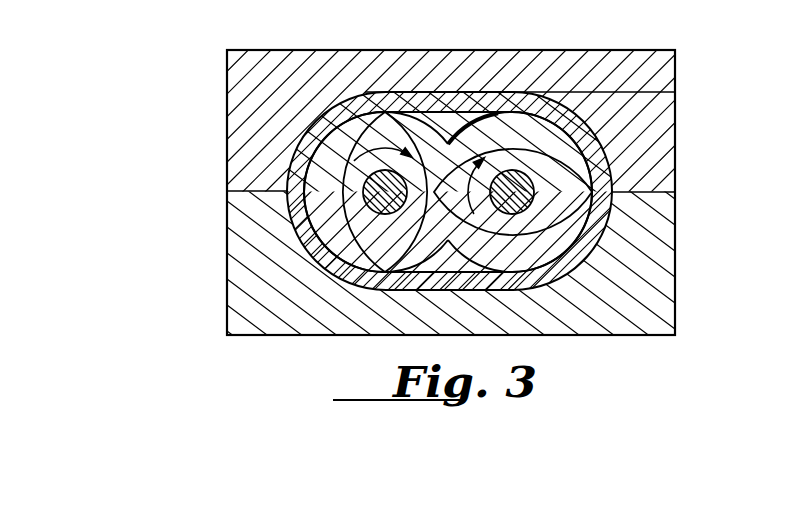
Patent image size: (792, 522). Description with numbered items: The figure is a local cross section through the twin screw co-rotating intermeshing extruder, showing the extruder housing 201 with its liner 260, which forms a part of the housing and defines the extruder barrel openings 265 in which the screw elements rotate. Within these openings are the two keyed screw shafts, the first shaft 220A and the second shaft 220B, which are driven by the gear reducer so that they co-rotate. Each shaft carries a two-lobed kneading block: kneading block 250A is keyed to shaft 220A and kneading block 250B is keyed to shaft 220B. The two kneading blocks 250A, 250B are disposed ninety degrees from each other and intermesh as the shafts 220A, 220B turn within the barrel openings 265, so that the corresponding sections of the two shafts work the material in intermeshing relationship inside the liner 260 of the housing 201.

The extruder housing 201 is at (210, 104).
The liner 260 is at (465, 107).
The extruder barrel openings 265 is at (541, 135).
The kneading block 250A is at (353, 177).
The kneading block 250B is at (551, 209).
The shaft 220A is at (371, 203).
The second shaft 220B is at (534, 192).